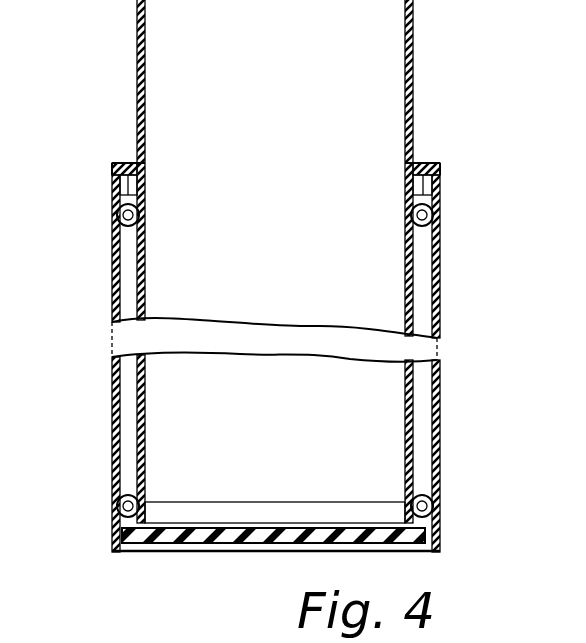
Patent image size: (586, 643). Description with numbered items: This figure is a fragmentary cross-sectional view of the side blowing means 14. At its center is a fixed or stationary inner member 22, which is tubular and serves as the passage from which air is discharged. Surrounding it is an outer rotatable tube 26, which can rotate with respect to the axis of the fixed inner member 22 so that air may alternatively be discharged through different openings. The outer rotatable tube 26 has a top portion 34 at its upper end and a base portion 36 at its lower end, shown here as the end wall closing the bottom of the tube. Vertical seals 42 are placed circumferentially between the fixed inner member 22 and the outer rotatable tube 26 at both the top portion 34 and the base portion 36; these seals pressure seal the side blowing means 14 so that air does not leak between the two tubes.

The side blowing means 14 is at (104, 194).
The fixed inner member 22 is at (436, 295).
The outer rotatable tube 26 is at (437, 394).
The top portion 34 is at (437, 188).
The base portion 36 is at (430, 535).
The vertical seals 42 is at (126, 226).